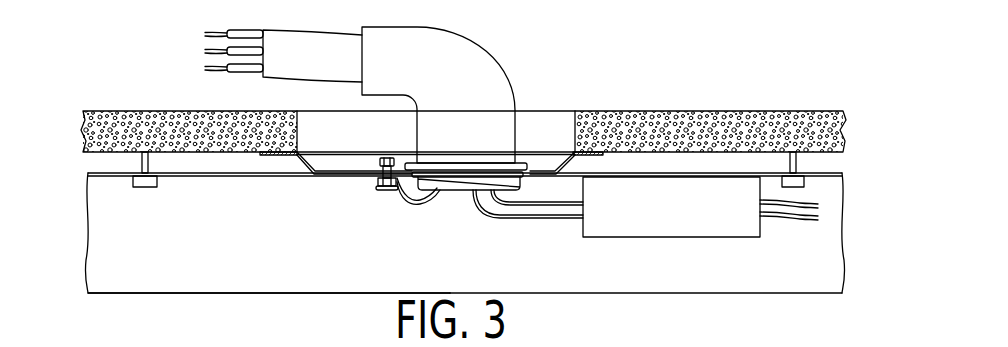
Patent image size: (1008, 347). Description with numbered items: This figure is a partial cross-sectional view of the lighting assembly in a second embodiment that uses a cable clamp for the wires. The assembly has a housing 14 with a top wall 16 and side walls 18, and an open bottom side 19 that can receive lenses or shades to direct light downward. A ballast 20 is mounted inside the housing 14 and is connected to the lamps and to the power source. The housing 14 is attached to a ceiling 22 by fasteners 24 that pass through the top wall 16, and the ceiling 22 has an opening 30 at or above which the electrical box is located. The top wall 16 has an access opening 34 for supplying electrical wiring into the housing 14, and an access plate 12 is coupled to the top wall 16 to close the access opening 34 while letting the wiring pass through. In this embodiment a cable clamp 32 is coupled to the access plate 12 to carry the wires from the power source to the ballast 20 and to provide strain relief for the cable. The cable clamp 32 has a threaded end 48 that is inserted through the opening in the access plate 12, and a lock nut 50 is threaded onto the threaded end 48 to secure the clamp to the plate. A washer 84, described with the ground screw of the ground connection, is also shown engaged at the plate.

The access plate 12 is at (540, 152).
The housing 14 is at (165, 293).
The top wall 16 is at (208, 176).
The side walls 18 is at (260, 273).
The open bottom side 19 is at (523, 278).
The ballast 20 is at (657, 238).
The ceiling 22 is at (725, 112).
The fasteners 24 is at (145, 187).
The opening 30 is at (298, 135).
The cable clamp 32 is at (508, 68).
The access opening 34 is at (337, 176).
The threaded end 48 is at (457, 190).
The lock nut 50 is at (523, 177).
The washer 84 is at (379, 178).